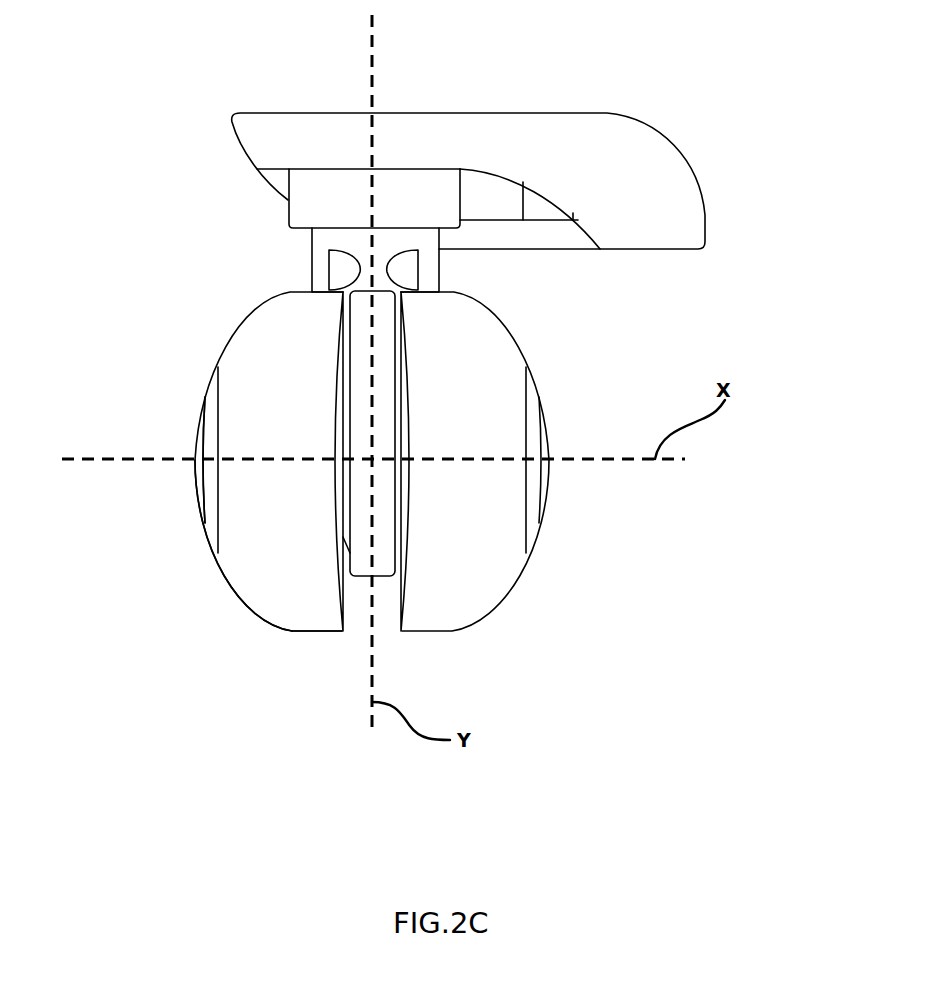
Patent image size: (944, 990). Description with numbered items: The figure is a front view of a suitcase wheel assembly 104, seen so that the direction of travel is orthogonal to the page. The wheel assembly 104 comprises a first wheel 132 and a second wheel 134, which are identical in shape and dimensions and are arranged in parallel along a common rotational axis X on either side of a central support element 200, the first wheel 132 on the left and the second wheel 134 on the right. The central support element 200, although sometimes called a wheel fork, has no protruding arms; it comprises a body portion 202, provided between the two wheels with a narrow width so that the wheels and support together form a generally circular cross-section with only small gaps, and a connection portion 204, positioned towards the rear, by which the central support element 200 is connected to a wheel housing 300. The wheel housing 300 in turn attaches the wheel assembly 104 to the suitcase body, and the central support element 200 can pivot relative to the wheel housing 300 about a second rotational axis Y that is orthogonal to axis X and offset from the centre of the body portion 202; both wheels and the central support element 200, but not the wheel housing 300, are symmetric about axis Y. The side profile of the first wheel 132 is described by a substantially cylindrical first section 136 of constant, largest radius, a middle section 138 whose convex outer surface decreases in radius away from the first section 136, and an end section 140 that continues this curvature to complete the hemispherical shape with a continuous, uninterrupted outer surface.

The wheel assembly 104 is at (149, 76).
The first wheel 132 is at (260, 335).
The second wheel 134 is at (490, 403).
The first section 136 is at (313, 655).
The middle section 138 is at (233, 622).
The end section 140 is at (179, 529).
The central support element 200 is at (317, 264).
The body portion 202 is at (380, 537).
The connection portion 204 is at (428, 263).
The wheel housing 300 is at (618, 142).